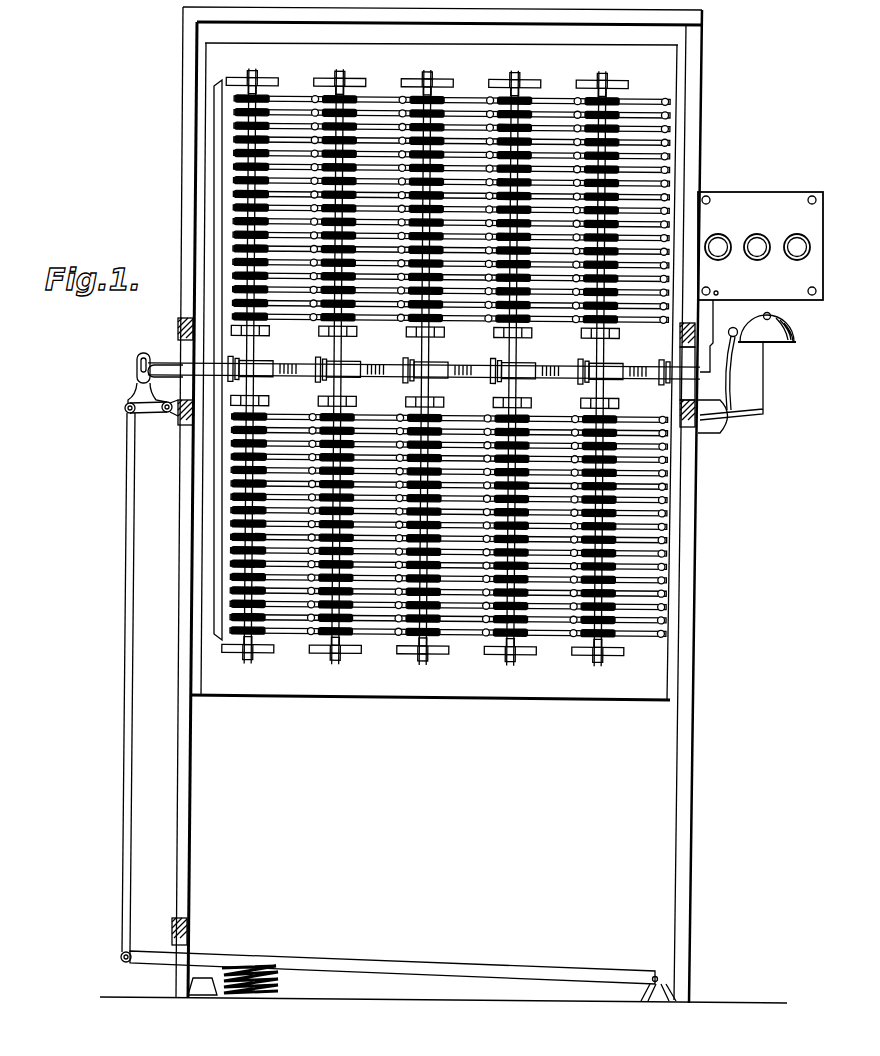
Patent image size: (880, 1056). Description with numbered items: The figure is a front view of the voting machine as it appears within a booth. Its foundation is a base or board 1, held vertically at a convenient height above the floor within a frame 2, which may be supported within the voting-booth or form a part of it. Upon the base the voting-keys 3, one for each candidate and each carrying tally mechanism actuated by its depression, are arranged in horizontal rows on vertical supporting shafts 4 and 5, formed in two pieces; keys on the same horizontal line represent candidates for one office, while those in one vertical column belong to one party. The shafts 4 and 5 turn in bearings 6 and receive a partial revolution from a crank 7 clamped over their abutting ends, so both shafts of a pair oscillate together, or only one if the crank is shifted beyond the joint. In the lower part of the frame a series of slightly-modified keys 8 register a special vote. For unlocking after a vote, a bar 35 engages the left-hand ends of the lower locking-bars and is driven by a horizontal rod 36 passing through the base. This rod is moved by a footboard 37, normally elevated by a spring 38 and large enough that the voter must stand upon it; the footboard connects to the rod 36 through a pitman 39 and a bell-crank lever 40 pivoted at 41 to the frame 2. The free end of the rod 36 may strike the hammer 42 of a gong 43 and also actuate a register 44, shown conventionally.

The base or board 1 is at (443, 505).
The frame 2 is at (178, 700).
The voting-keys 3 is at (379, 320).
The vertical supporting shaft 4 is at (336, 362).
The vertical supporting shaft 5 is at (338, 378).
The bearings 6 is at (322, 81).
The crank 7 is at (288, 366).
The modified keys 8 is at (277, 645).
The bar 35 is at (216, 122).
The horizontal rod 36 is at (162, 362).
The footboard 37 is at (373, 962).
The spring 38 is at (280, 988).
The pitman 39 is at (125, 716).
The bell-crank lever 40 is at (138, 394).
The pivot 41 is at (165, 412).
The hammer 42 is at (730, 378).
The gong 43 is at (795, 336).
The register 44 is at (760, 246).